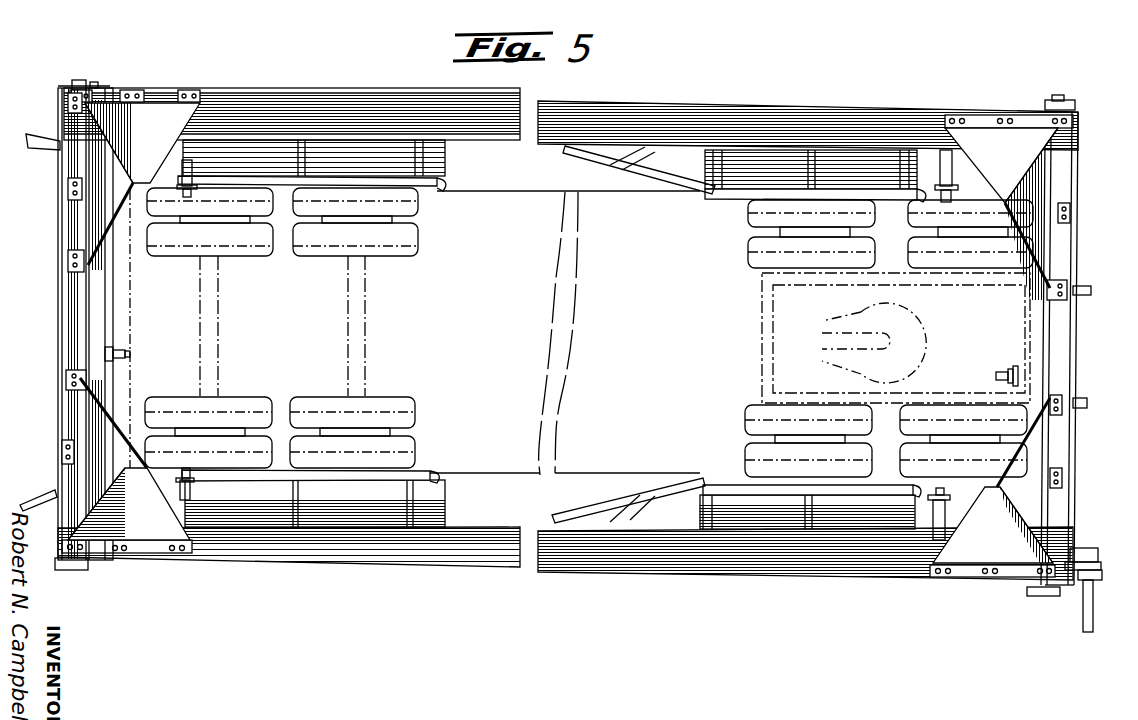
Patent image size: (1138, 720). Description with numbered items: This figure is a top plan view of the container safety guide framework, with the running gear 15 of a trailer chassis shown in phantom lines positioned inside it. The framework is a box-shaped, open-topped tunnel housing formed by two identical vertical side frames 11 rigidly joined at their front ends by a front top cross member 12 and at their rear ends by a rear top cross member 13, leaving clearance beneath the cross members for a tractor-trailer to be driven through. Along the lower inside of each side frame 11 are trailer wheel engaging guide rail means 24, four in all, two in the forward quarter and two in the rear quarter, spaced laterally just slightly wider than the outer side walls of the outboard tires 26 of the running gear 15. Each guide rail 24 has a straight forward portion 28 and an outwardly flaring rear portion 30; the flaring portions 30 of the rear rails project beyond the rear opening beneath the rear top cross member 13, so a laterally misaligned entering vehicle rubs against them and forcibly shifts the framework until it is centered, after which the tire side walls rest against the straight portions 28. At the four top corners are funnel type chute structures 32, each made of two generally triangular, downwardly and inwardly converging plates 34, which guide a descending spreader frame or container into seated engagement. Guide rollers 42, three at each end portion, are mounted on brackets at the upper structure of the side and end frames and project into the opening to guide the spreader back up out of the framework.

The vertical side frames 11 is at (848, 104).
The front top cross member 12 is at (1072, 348).
The rear top cross member 13 is at (56, 338).
The running gear of the trailer chassis 15 is at (366, 330).
The trailer wheel engaging guide rail means 24 is at (283, 172).
The outboard tires 26 is at (420, 211).
The straight forward portion 28 is at (342, 176).
The outwardly flaring rear portion 30 is at (33, 136).
The funnel type chute structures 32 is at (182, 108).
The converging plates 34 is at (167, 149).
The guide rollers 42 is at (189, 190).